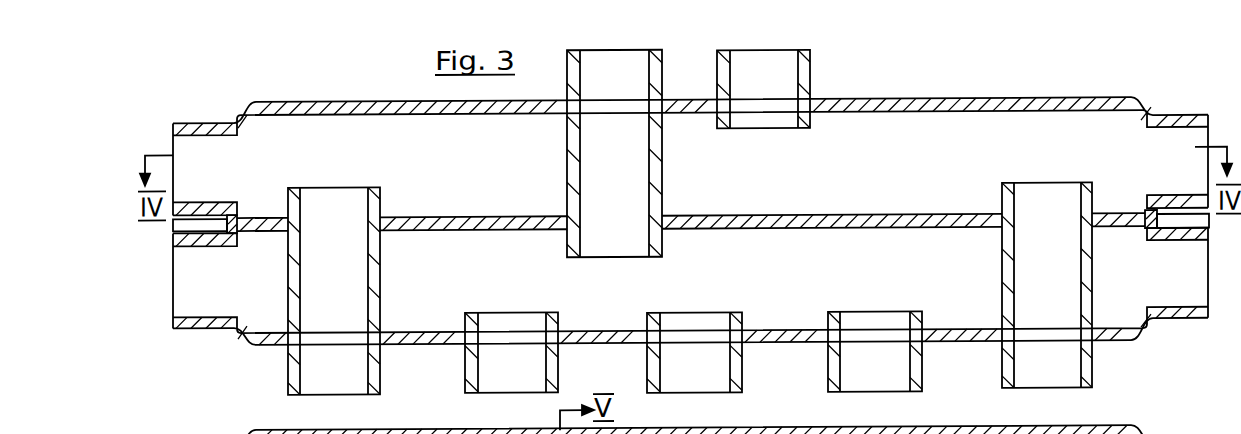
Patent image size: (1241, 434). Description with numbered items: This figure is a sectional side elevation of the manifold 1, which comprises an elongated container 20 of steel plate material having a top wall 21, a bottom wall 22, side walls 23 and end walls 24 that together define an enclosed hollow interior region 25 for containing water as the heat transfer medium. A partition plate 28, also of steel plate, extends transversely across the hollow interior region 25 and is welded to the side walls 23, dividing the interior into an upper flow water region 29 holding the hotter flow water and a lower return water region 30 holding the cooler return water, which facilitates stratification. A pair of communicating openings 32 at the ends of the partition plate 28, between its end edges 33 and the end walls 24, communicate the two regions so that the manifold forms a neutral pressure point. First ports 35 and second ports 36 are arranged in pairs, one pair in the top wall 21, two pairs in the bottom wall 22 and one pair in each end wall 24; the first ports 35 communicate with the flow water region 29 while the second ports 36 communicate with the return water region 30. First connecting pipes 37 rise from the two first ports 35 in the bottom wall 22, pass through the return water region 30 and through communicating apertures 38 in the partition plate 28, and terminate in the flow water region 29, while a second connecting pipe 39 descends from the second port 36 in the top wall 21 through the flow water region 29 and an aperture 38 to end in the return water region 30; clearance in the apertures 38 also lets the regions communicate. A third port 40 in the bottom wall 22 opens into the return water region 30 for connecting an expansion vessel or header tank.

The manifold 1 is at (203, 359).
The elongated container 20 is at (338, 104).
The top wall 21 is at (918, 105).
The bottom wall 22 is at (760, 331).
The side walls 23 is at (253, 152).
The end walls 24 is at (173, 231).
The hollow interior region 25 is at (822, 148).
The partition plate 28 is at (818, 216).
The flow water region 29 is at (1028, 138).
The return water region 30 is at (937, 297).
The communicating openings 32 is at (253, 217).
The end edges 33 is at (245, 234).
The first ports 35 is at (192, 152).
The second ports 36 is at (195, 285).
The first connecting pipes 37 is at (382, 311).
The communicating apertures 38 is at (387, 218).
The second connecting pipe 39 is at (662, 195).
The third port 40 is at (703, 387).